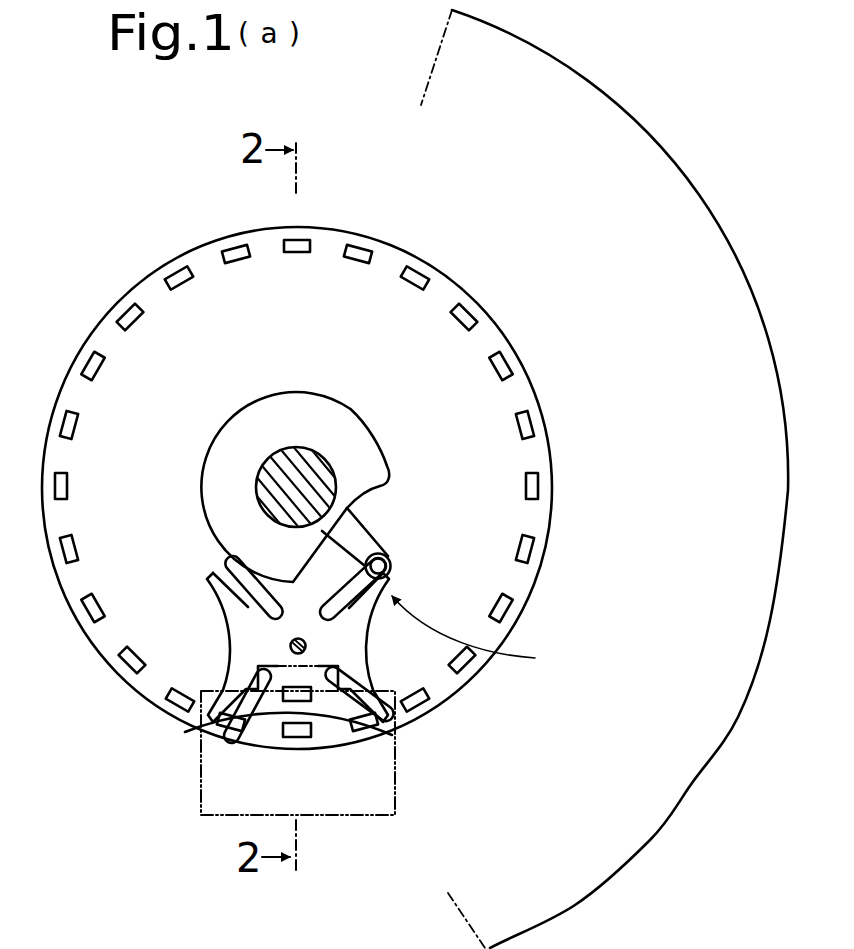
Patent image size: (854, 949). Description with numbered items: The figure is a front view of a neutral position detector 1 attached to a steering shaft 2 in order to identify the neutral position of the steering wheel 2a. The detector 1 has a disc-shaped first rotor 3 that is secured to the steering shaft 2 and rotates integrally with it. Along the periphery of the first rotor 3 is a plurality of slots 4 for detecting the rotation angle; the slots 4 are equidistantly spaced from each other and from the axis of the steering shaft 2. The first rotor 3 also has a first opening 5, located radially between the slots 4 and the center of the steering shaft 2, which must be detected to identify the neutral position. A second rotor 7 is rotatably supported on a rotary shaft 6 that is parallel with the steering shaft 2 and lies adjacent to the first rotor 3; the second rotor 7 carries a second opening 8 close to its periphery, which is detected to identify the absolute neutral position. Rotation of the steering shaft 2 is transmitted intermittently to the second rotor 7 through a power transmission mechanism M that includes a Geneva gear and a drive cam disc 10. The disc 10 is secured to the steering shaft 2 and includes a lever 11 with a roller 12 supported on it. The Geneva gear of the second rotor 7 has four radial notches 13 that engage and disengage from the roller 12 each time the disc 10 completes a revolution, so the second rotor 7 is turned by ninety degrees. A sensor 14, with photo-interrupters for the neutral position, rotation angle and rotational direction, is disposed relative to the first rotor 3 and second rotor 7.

The neutral position detector 1 is at (418, 738).
The steering shaft 2 is at (312, 458).
The steering wheel 2a is at (600, 90).
The first rotor 3 is at (135, 285).
The slots 4 is at (304, 736).
The first opening 5 is at (318, 715).
The rotary shaft 6 is at (308, 644).
The second rotor 7 is at (237, 647).
The second opening 8 is at (283, 698).
The drive cam disc 10 is at (232, 437).
The lever 11 is at (348, 521).
The roller 12 is at (382, 561).
The radial notches 13 is at (342, 607).
The sensor 14 is at (330, 818).
The power transmission mechanism M is at (478, 642).